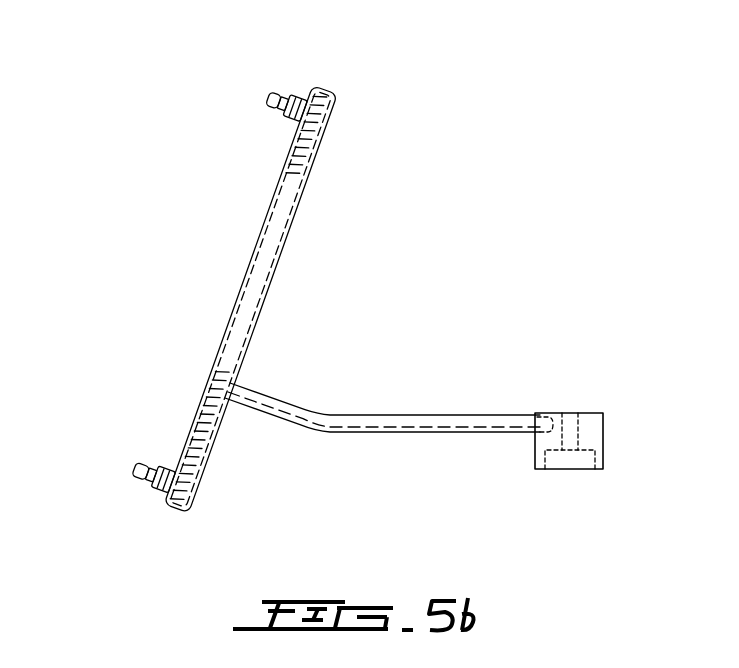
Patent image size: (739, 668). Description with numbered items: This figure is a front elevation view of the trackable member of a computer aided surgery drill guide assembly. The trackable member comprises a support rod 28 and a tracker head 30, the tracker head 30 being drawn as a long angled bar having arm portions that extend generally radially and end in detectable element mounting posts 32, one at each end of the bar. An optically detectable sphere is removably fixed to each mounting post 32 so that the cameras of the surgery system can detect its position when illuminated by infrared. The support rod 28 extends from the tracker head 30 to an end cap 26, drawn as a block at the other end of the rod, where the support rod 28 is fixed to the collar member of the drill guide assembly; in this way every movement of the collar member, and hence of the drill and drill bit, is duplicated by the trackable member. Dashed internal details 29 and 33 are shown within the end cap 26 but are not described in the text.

The end cap 26 is at (592, 428).
The support rod 28 is at (437, 430).
The inlet passage 29 is at (566, 428).
The tracker head 30 is at (262, 227).
The detectable element mounting post 32 is at (268, 98).
The outlet passage 33 is at (592, 459).